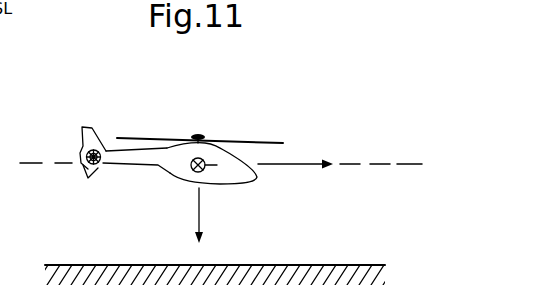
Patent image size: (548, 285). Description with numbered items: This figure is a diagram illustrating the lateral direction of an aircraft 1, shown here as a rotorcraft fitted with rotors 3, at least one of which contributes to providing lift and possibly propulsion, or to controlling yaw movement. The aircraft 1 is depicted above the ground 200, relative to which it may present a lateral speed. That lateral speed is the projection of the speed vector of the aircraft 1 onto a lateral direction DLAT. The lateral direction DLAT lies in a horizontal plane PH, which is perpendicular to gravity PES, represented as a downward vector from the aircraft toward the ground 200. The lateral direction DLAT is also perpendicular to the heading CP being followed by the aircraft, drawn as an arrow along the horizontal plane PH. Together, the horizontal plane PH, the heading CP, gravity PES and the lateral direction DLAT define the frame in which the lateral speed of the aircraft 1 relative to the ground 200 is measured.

The aircraft 1 is at (166, 151).
The rotors 3 is at (108, 134).
The ground 200 is at (125, 265).
The horizontal plane PH is at (45, 163).
The heading CP is at (305, 167).
The lateral direction DLAT is at (252, 176).
The gravity PES is at (227, 216).